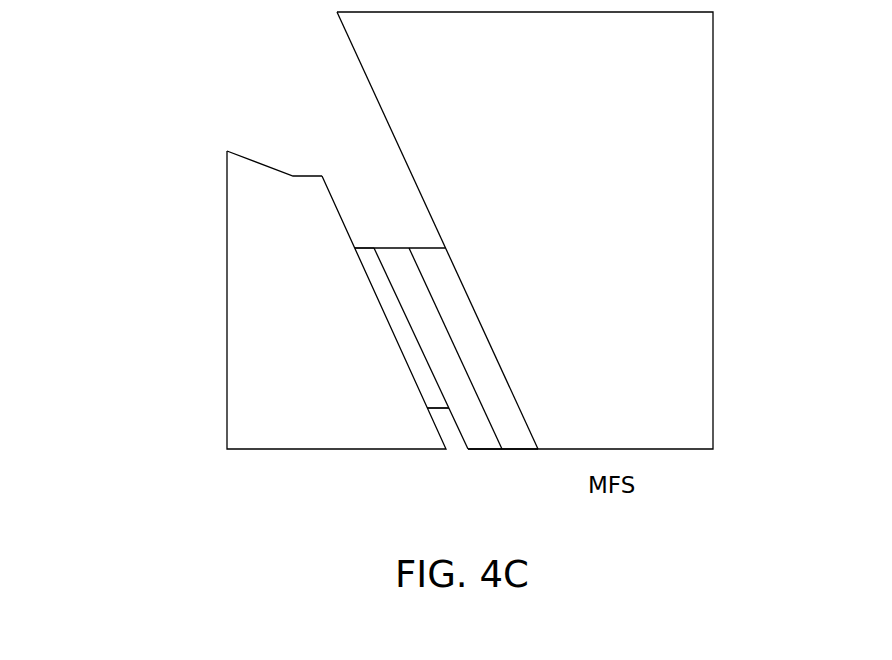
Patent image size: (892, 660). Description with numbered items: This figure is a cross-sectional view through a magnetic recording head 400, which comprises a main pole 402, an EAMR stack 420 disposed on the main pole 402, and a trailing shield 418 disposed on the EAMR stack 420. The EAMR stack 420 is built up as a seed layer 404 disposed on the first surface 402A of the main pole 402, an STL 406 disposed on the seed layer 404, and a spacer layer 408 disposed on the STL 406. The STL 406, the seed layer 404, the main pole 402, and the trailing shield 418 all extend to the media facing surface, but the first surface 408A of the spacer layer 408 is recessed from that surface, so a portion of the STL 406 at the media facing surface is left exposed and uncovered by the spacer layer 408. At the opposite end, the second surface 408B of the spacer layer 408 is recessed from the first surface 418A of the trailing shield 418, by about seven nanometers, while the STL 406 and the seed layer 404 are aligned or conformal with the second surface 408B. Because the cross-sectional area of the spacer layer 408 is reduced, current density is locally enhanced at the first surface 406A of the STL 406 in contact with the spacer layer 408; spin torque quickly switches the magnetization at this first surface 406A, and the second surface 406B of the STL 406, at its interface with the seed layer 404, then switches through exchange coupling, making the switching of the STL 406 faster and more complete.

The magnetic recording head 400 is at (142, 72).
The main pole 402 is at (585, 83).
The first surface of the main pole 402A is at (358, 62).
The seed layer 404 is at (448, 287).
The STL 406 is at (394, 257).
The first surface of the STL 406A is at (420, 348).
The second surface of the STL 406B is at (457, 345).
The spacer layer 408 is at (387, 297).
The first surface of the spacer layer 408A is at (442, 410).
The second surface of the spacer layer 408B is at (362, 243).
The trailing shield 418 is at (297, 428).
The first surface of the trailing shield 418A is at (306, 176).
The EAMR stack 420 is at (532, 379).